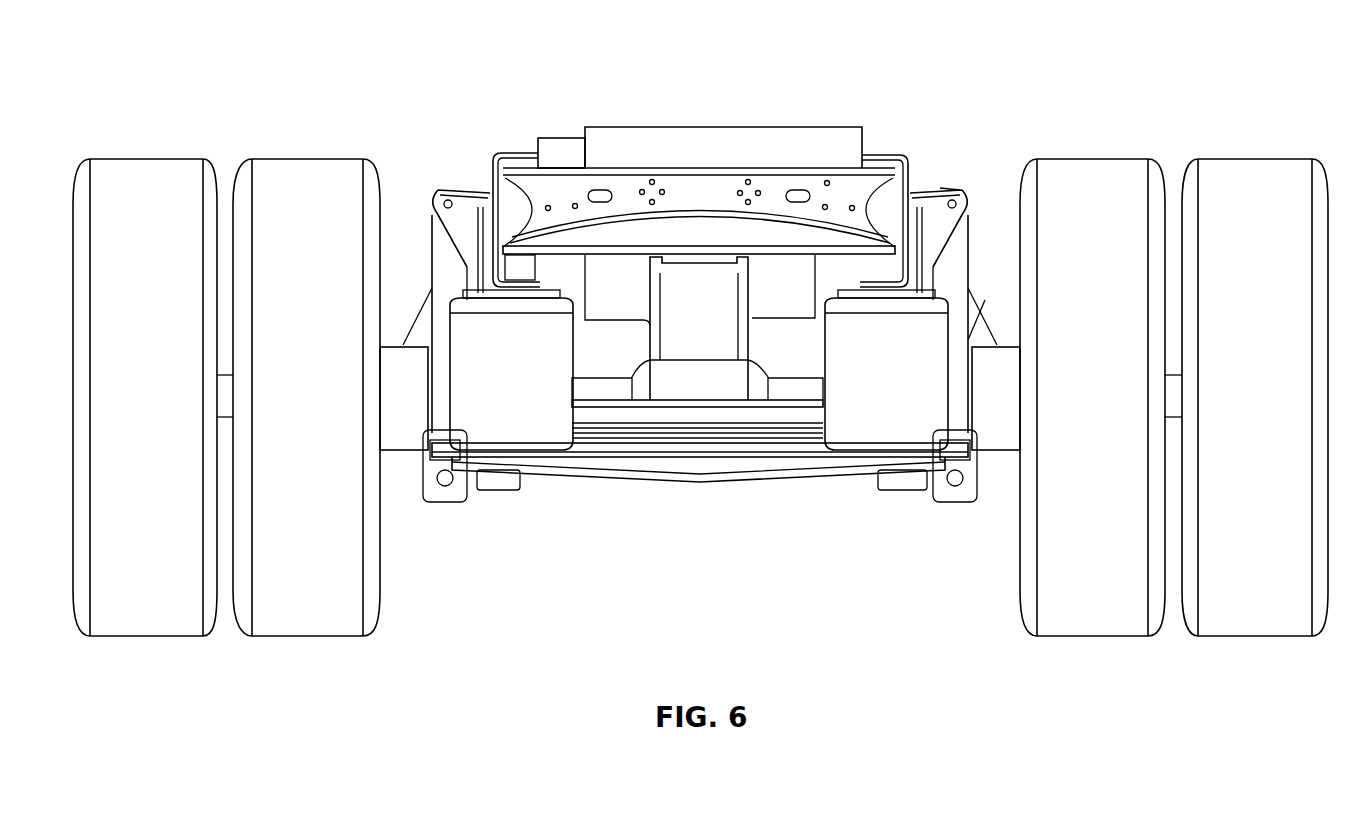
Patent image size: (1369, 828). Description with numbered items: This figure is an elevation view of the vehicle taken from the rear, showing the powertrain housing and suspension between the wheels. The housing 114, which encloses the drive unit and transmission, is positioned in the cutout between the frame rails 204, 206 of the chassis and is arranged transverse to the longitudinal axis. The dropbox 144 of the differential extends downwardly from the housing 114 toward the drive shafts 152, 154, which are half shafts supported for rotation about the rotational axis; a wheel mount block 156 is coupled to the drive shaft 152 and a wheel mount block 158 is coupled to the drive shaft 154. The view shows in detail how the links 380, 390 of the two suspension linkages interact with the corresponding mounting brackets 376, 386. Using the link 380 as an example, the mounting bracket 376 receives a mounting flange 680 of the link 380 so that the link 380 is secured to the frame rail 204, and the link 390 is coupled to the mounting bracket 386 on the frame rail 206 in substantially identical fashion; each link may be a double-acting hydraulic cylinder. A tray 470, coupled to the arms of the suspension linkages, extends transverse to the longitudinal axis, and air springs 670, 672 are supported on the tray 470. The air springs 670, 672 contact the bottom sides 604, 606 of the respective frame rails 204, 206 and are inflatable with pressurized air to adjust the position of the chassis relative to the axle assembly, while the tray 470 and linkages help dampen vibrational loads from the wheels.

The housing 114 is at (767, 297).
The dropbox 144 is at (681, 377).
The drive shaft 152 is at (620, 388).
The drive shaft 154 is at (818, 390).
The wheel mount block 156 is at (392, 415).
The wheel mount block 158 is at (1005, 405).
The frame rail 204 is at (870, 153).
The frame rail 206 is at (503, 153).
The mounting bracket 376 is at (928, 190).
The link 380 is at (968, 235).
The mounting bracket 386 is at (467, 188).
The link 390 is at (447, 255).
The tray 470 is at (583, 465).
The bottom side 604 is at (975, 280).
The bottom side 606 is at (527, 277).
The air spring 670 is at (885, 415).
The air spring 672 is at (528, 383).
The mounting flange 680 is at (950, 185).